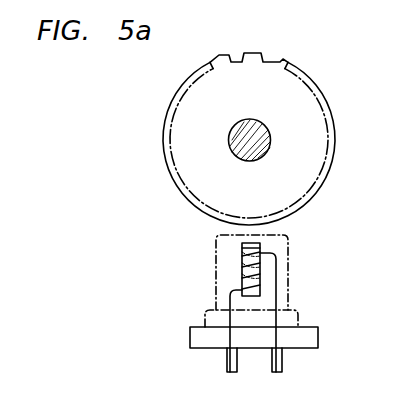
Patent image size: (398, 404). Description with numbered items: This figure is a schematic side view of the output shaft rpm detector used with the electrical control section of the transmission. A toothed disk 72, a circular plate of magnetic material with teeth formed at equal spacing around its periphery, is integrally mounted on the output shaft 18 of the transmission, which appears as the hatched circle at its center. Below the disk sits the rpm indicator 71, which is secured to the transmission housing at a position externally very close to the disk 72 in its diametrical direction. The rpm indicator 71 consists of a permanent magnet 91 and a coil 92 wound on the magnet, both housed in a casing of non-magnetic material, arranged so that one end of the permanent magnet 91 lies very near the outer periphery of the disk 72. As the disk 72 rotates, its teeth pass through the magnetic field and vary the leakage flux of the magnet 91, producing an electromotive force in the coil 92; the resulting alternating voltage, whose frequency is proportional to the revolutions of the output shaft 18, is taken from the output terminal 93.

The toothed disk 72 is at (283, 60).
The output shaft 18 is at (259, 129).
The rpm indicator 71 is at (190, 338).
The permanent magnet 91 is at (262, 286).
The coil 92 is at (242, 268).
The output terminal 93 is at (227, 360).